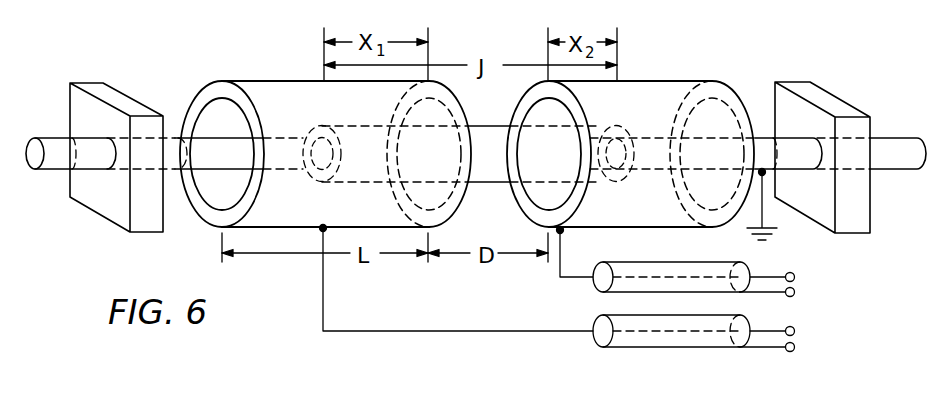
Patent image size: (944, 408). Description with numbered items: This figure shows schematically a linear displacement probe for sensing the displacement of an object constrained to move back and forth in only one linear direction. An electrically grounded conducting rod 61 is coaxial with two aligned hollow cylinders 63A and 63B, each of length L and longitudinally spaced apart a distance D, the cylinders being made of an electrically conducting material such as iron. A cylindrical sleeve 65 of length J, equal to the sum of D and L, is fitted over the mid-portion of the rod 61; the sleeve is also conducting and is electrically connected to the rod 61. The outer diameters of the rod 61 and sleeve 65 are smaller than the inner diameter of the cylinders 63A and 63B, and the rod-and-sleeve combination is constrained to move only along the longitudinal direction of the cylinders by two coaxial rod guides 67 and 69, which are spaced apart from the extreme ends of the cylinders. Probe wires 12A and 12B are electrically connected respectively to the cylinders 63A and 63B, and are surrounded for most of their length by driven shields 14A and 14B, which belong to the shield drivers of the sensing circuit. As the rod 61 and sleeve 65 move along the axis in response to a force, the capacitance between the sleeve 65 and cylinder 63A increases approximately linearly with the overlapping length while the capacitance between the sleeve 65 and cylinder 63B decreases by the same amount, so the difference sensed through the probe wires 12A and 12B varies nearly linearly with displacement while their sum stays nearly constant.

The conducting rod 61 is at (52, 173).
The hollow cylinder 63A is at (265, 81).
The hollow cylinder 63B is at (688, 67).
The cylindrical sleeve 65 is at (483, 125).
The coaxial rod guide 67 is at (829, 91).
The coaxial rod guide 69 is at (88, 82).
The probe wire 12A is at (798, 330).
The driven shield 14A is at (793, 352).
The probe wire 12B is at (798, 277).
The driven shield 14B is at (793, 302).